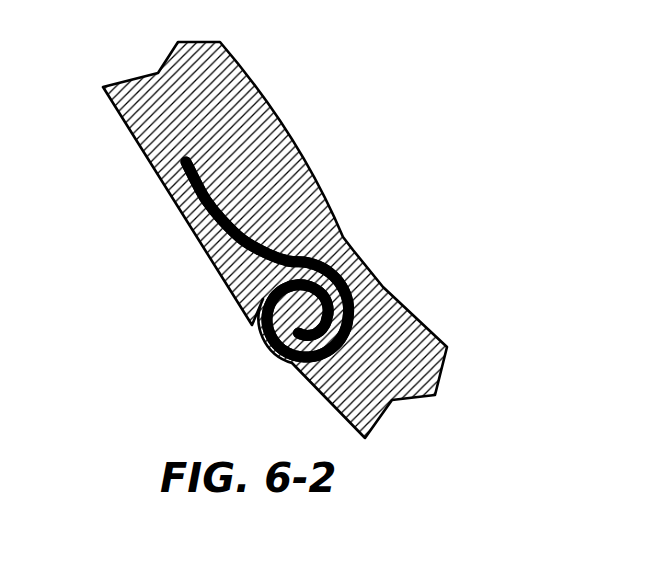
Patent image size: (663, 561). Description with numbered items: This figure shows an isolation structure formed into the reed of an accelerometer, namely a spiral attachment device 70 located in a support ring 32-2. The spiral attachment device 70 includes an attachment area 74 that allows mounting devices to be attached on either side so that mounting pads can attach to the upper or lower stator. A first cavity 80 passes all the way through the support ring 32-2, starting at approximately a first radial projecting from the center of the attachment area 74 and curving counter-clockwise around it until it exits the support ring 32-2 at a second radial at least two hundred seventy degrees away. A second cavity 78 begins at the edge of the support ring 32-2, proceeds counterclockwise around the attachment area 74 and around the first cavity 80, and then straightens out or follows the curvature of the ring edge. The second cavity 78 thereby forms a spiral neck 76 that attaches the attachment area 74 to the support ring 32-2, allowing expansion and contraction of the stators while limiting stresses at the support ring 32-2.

The support ring 32-2 is at (425, 372).
The spiral attachment device 70 is at (249, 355).
The attachment area 74 is at (352, 252).
The spiral neck 76 is at (338, 315).
The second cavity 78 is at (208, 203).
The first cavity 80 is at (262, 298).